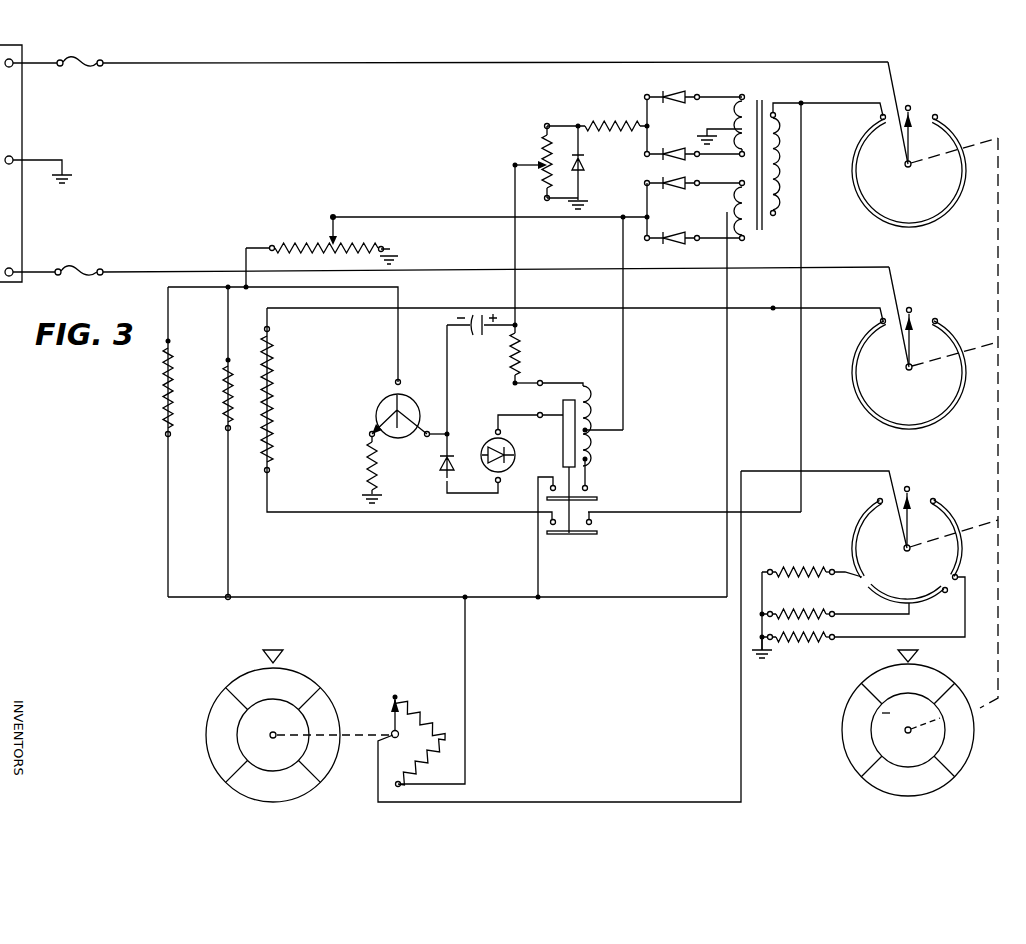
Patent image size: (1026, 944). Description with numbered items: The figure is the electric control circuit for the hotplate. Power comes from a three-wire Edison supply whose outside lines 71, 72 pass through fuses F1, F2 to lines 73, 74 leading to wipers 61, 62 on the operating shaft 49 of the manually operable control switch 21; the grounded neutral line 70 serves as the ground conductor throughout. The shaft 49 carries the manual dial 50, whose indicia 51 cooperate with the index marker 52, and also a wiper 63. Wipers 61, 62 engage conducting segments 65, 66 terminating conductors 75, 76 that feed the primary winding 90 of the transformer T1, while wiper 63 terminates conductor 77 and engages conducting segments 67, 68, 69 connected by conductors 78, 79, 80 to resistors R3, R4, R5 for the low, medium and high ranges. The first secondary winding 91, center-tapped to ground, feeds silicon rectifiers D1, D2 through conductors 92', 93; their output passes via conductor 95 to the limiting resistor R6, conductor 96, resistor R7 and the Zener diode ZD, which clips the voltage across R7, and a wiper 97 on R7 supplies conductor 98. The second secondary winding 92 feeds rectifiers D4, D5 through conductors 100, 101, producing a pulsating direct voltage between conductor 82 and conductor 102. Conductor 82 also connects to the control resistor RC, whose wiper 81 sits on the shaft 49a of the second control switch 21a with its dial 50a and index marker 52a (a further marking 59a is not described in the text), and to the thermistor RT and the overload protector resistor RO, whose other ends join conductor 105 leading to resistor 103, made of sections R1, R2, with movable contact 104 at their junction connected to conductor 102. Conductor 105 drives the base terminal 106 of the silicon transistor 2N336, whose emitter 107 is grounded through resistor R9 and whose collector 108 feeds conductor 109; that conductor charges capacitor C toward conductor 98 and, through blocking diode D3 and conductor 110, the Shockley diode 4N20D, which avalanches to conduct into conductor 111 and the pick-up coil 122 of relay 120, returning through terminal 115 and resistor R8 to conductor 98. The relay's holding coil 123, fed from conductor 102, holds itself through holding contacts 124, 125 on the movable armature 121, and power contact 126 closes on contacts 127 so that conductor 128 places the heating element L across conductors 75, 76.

The outside line 71 is at (58, 66).
The fuse F1 is at (96, 66).
The line 73 is at (200, 64).
The grounded neutral line 70 is at (42, 160).
The outside line 72 is at (48, 268).
The fuse F2 is at (85, 265).
The line 74 is at (190, 268).
The conductor 105 is at (246, 244).
The resistor section R1 is at (290, 245).
The resistor 103 is at (318, 245).
The movable contact 104 is at (333, 218).
The resistor section R2 is at (372, 246).
The conductor 96 is at (563, 126).
The resistor R7 is at (543, 142).
The wiper 97 is at (530, 165).
The conductor 98 is at (515, 203).
The limiting resistor R6 is at (606, 120).
The Zener diode ZD is at (583, 164).
The conductor 95 is at (646, 96).
The silicon rectifier D1 is at (696, 83).
The conductor 92' is at (719, 105).
The first secondary winding 91 is at (736, 111).
The main power supply transformer T1 is at (760, 98).
The silicon rectifier D2 is at (693, 141).
The conductor 93 is at (665, 158).
The conductor 100 is at (693, 186).
The second secondary winding 92 is at (725, 211).
The silicon diode rectifier D4 is at (662, 209).
The conductor 101 is at (718, 228).
The silicon diode rectifier D5 is at (672, 247).
The primary winding 90 is at (783, 178).
The conductor 102 is at (620, 240).
The conductor 82 is at (728, 268).
The conductor 75 is at (848, 103).
The wiper 61 is at (910, 137).
The operating shaft 49 is at (896, 738).
The conducting segment 65 is at (935, 206).
The conductor 76 is at (855, 310).
The wiper 62 is at (911, 350).
The conducting segment 66 is at (930, 412).
The conductor 77 is at (858, 470).
The conducting segment 69 is at (858, 512).
The conducting segment 67 is at (952, 512).
The wiper 63 is at (910, 525).
The conducting segment 68 is at (895, 598).
The resistor R5 is at (798, 598).
The conductor 80 is at (845, 575).
The resistor R4 is at (800, 607).
The conductor 79 is at (852, 614).
The resistor R3 is at (795, 642).
The conductor 78 is at (848, 638).
The manual dial 50 is at (925, 758).
The index marker 52 is at (917, 652).
The indicia 51 is at (952, 690).
The manually operable control switch 21 is at (806, 750).
The overload protector resistor RO is at (165, 380).
The thermistor RT is at (223, 386).
The heating element L is at (274, 398).
The conductor 128 is at (280, 512).
The silicon transistor 2N336 is at (386, 395).
The base terminal 106 is at (401, 385).
The emitter 107 is at (387, 415).
The collector 108 is at (415, 446).
The resistor R9 is at (366, 458).
The charging capacitor C is at (482, 374).
The resistor R8 is at (530, 349).
The terminal 115 is at (520, 380).
The electromagnetic actuator or relay 120 is at (586, 356).
The pick-up coil 122 is at (584, 388).
The conductor 109 is at (447, 406).
The conductor 111 is at (537, 415).
The movable armature 121 is at (577, 420).
The blocking silicon diode D3 is at (470, 460).
The Shockley diode 4N20D is at (521, 456).
The holding coil 123 is at (588, 436).
The conductor 110 is at (490, 495).
The holding contact 124 is at (592, 488).
The holding contact 125 is at (598, 499).
The power contacts 127 is at (550, 522).
The power contact 126 is at (588, 535).
The second manually operable control switch 21a is at (176, 727).
The manual dial 50a is at (226, 683).
The index marker 52a is at (278, 651).
The dial ring 59a is at (218, 763).
The operating shaft 49a is at (285, 735).
The wiper 81 is at (392, 730).
The control resistor RC is at (446, 715).